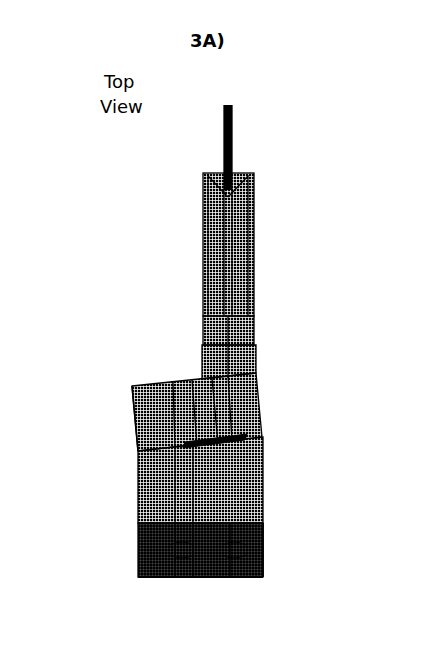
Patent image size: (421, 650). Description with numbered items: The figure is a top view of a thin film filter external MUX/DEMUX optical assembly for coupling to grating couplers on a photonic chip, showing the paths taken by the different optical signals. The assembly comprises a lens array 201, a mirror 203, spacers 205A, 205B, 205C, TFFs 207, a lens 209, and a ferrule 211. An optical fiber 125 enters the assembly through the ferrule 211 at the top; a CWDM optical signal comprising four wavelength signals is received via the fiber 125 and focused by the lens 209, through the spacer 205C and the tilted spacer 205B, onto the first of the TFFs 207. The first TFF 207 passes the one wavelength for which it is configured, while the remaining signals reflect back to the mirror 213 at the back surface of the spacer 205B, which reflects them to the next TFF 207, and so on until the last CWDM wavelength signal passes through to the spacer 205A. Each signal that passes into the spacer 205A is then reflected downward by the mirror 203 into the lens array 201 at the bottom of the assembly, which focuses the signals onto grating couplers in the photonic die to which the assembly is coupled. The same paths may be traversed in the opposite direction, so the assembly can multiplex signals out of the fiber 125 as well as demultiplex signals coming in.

The fiber 125 is at (245, 137).
The ferrule 211 is at (192, 248).
The lens 209 is at (264, 320).
The spacer 205C is at (191, 352).
The spacer 205B is at (268, 396).
The mirror 213 is at (140, 385).
The TFFs 207 is at (254, 436).
The spacer 205A is at (275, 489).
The lens array 201 is at (144, 548).
The mirror 203 is at (275, 554).